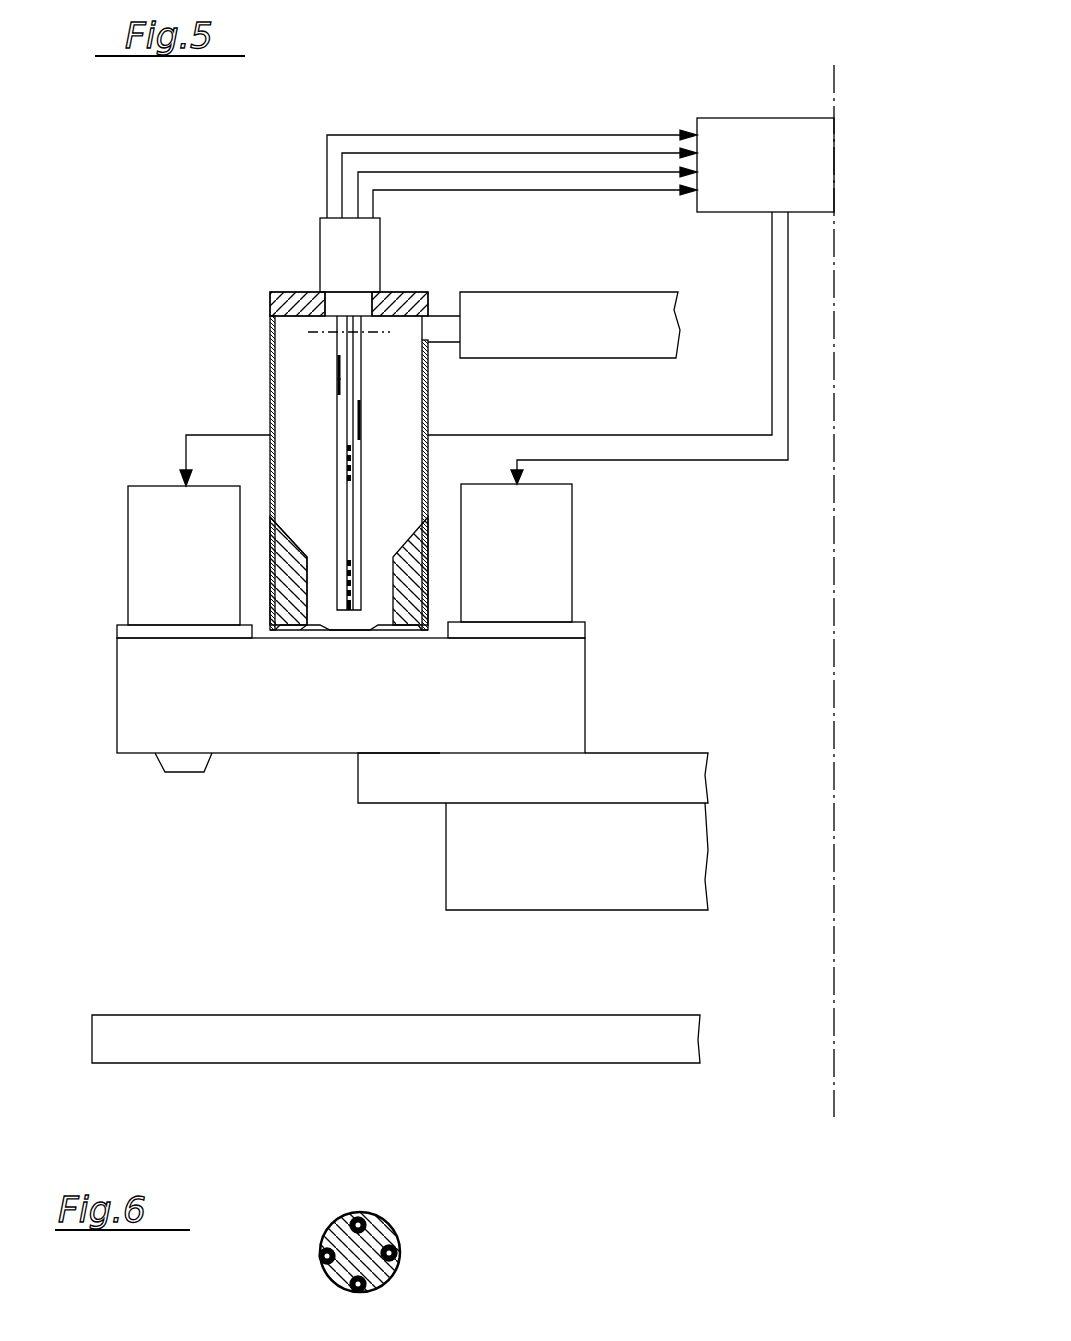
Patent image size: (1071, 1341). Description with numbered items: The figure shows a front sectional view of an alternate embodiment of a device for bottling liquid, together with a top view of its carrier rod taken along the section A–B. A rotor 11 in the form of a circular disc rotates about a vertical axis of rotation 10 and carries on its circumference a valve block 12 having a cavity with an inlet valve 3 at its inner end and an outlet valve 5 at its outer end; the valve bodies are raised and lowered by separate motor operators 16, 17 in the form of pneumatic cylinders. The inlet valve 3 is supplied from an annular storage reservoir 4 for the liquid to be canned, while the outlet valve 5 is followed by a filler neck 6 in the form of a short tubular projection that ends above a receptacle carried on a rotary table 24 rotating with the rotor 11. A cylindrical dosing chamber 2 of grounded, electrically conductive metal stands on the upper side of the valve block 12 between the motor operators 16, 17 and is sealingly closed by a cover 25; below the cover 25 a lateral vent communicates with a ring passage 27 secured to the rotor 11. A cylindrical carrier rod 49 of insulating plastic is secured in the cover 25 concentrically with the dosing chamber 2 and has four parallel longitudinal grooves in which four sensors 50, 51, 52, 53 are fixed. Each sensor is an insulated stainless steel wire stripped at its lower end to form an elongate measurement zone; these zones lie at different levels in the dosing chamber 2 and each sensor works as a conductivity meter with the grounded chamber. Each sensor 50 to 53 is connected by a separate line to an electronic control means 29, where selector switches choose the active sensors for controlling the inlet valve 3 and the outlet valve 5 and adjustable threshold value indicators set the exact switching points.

In FIG. 5, the dosing chamber 2 is at (270, 400).
In FIG. 5, the inlet valve 3 is at (535, 690).
In FIG. 5, the storage reservoir 4 is at (665, 877).
In FIG. 5, the outlet valve 5 is at (180, 695).
In FIG. 5, the filler neck 6 is at (180, 762).
In FIG. 5, the axis of rotation 10 is at (834, 80).
In FIG. 5, the rotor 11 is at (688, 765).
In FIG. 5, the valve block 12 is at (135, 735).
In FIG. 5, the motor operator 16 is at (535, 558).
In FIG. 5, the motor operator 17 is at (200, 558).
In FIG. 5, the rotary table 24 is at (145, 1035).
In FIG. 5, the cover 25 is at (285, 300).
In FIG. 5, the ring passage 27 is at (640, 325).
In FIG. 5, the electronic control means 29 is at (762, 148).
In FIG. 5, the carrier rod 49 is at (345, 512).
In FIG. 6, the carrier rod 49 is at (377, 1232).
In FIG. 5, the sensor 50 is at (337, 378).
In FIG. 6, the sensor 50 is at (320, 1256).
In FIG. 5, the sensor 51 is at (350, 610).
In FIG. 6, the sensor 51 is at (360, 1294).
In FIG. 5, the sensor 52 is at (361, 425).
In FIG. 6, the sensor 52 is at (400, 1252).
In FIG. 5, the sensor 53 is at (349, 482).
In FIG. 6, the sensor 53 is at (355, 1218).